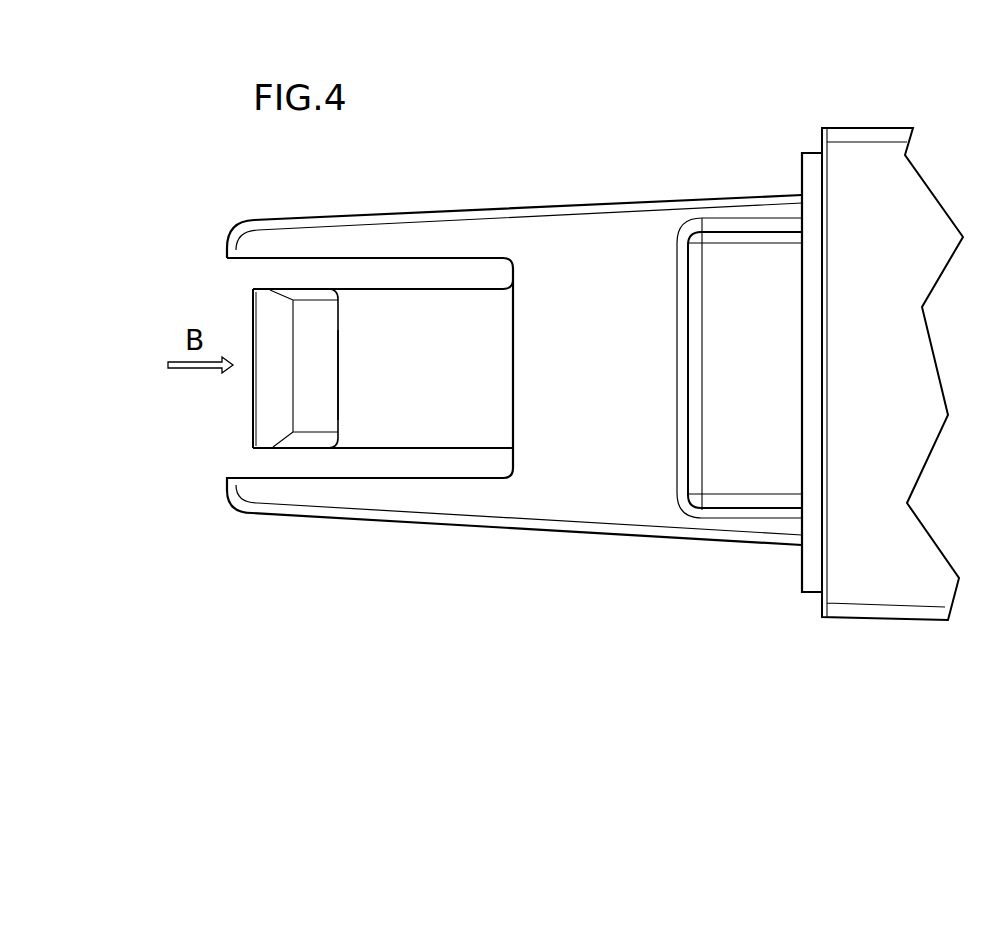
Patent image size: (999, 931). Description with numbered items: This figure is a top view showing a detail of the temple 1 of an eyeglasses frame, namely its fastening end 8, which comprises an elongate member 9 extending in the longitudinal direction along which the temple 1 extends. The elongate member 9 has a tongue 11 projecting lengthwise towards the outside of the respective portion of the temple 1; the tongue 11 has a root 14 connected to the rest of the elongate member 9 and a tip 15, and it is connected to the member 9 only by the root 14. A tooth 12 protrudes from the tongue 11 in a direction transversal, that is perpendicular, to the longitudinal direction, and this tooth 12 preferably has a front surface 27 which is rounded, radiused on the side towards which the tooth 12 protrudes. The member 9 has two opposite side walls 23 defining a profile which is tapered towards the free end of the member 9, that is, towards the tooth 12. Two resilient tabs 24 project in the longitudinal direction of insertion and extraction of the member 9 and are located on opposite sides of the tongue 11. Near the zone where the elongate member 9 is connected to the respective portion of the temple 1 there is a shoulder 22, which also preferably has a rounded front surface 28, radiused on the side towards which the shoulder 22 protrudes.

The temple 1 is at (882, 449).
The fastening end 8 is at (874, 346).
The elongate member 9 is at (494, 402).
The tongue 11 is at (368, 402).
The tooth 12 is at (303, 402).
The root 14 is at (513, 413).
The tip 15 is at (338, 400).
The shoulder 22 is at (730, 277).
The side walls 23 is at (514, 369).
The resilient tabs 24 is at (355, 230).
The front surface 27 is at (253, 312).
The front surface 28 is at (702, 305).